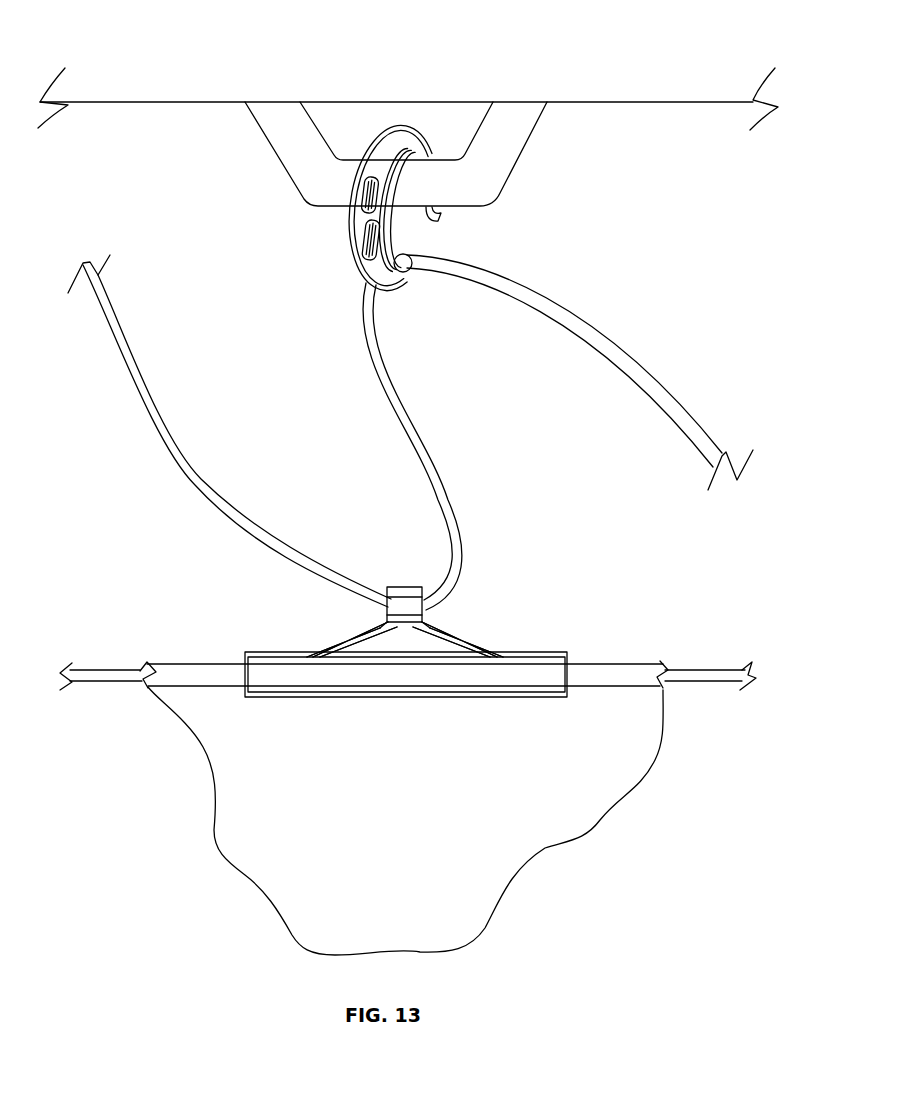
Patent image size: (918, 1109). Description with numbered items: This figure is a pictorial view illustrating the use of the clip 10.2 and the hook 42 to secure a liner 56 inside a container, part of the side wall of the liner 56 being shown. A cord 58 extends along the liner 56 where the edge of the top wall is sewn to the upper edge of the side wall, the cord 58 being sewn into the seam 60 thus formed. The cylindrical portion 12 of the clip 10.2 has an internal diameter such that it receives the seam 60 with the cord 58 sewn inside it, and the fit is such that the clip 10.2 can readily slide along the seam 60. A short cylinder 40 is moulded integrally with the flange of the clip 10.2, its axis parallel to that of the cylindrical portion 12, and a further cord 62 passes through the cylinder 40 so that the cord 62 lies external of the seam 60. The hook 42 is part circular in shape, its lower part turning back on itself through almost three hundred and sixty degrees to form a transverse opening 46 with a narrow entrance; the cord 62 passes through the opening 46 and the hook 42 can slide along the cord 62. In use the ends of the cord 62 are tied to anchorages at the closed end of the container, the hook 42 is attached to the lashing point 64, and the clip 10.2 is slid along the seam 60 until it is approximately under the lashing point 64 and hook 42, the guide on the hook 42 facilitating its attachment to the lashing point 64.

The hook 42 is at (409, 126).
The lashing point 64 is at (487, 158).
The cord 62 is at (150, 385).
The transverse opening 46 is at (406, 282).
The short cylinder 40 is at (387, 587).
The cylindrical portion 12 is at (273, 642).
The clip 10.2 is at (473, 628).
The seam 60 is at (607, 663).
The cord 58 is at (103, 680).
The liner 56 is at (605, 825).